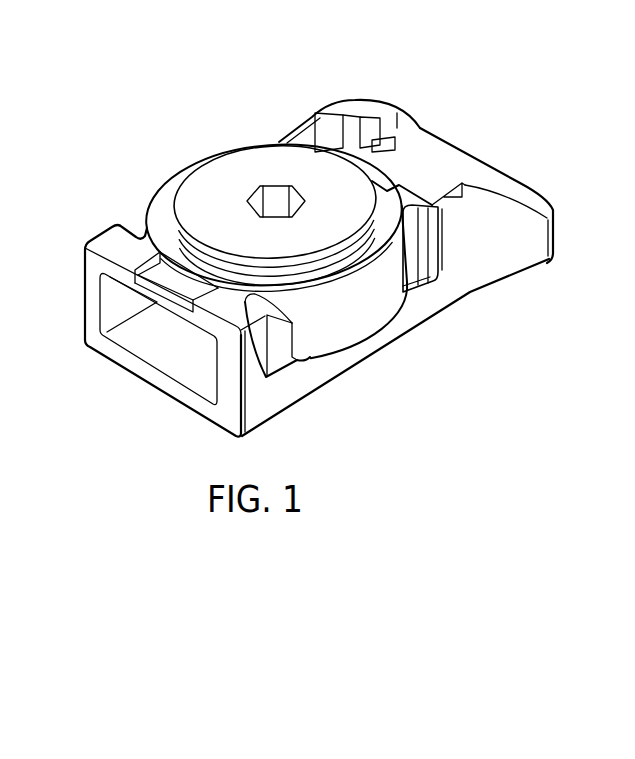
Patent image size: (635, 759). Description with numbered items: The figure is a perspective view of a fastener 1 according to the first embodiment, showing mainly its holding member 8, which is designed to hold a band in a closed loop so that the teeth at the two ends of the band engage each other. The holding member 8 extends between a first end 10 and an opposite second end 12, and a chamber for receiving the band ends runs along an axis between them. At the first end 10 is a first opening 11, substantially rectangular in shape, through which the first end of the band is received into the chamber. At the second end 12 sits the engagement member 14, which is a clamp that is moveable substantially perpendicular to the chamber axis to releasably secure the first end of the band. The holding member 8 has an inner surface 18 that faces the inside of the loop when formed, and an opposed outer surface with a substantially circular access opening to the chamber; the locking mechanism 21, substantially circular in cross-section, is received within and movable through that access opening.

The fastener 1 is at (126, 180).
The holding member 8 is at (527, 247).
The first end of the holding member 10 is at (207, 420).
The first opening 11 is at (162, 345).
The second end of the holding member 12 is at (558, 227).
The engagement member 14 is at (473, 172).
The inner surface 18 is at (410, 331).
The locking mechanism 21 is at (249, 174).